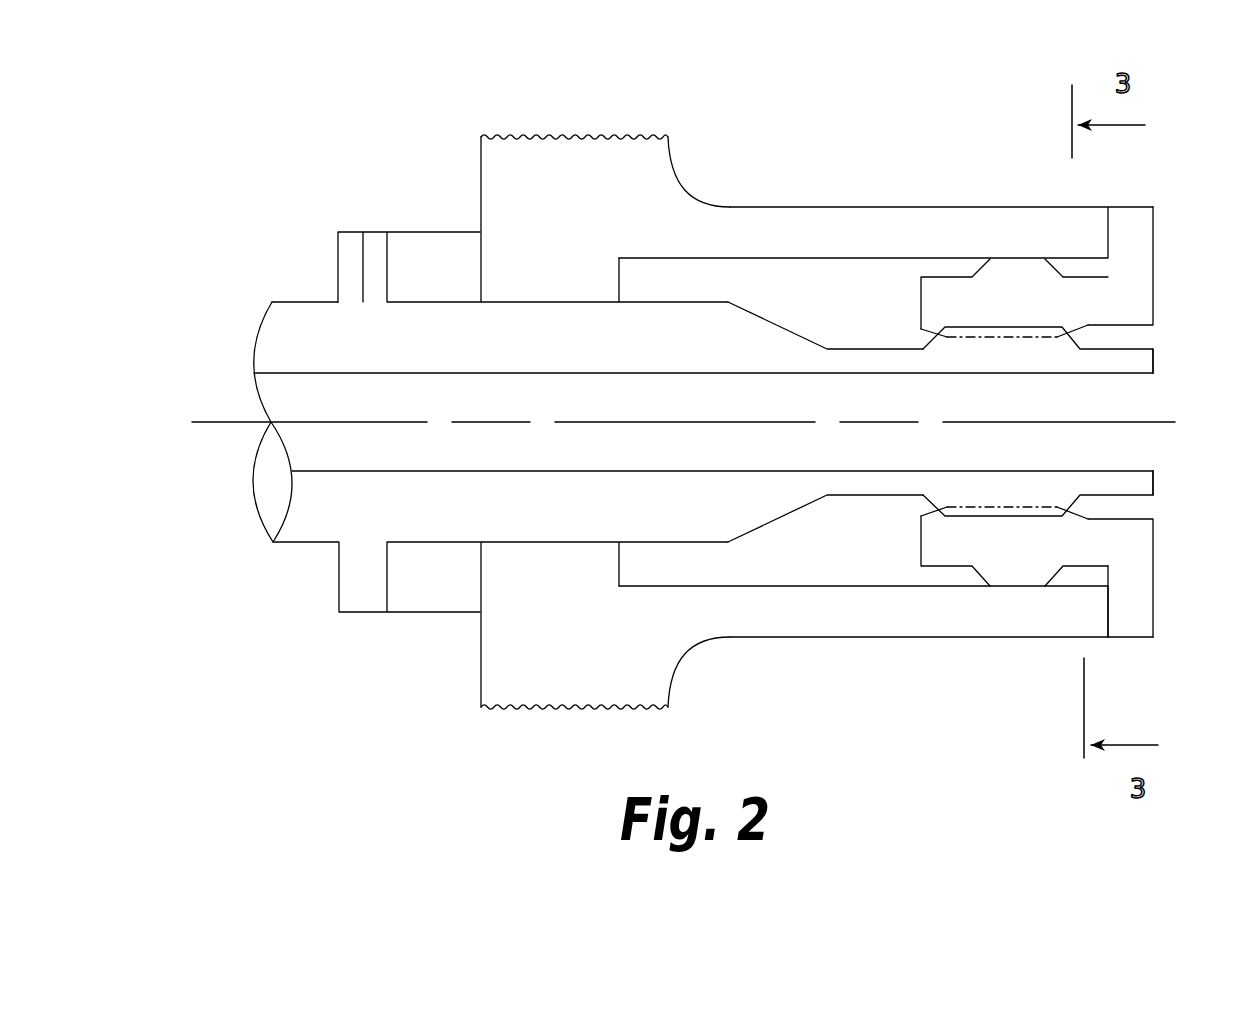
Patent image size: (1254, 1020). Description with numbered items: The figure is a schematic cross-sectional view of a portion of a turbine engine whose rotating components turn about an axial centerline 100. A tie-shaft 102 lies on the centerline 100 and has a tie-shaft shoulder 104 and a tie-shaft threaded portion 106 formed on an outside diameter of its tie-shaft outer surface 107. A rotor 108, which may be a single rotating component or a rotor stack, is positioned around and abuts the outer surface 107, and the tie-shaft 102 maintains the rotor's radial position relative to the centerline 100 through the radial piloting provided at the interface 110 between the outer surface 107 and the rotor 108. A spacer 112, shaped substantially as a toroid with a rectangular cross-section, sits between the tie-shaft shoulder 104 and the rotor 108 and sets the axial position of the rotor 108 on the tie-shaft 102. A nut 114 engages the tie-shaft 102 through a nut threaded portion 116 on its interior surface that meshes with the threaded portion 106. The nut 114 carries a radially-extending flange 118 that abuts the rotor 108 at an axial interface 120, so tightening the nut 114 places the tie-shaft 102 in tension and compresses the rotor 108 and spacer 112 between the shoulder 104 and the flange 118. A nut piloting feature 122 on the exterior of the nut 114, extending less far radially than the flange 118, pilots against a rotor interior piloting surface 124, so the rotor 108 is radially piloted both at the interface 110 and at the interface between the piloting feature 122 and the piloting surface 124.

The axial centerline 100 is at (227, 423).
The tie-shaft 102 is at (306, 296).
The tie-shaft shoulder 104 is at (358, 616).
The tie-shaft threaded portion 106 is at (965, 516).
The tie-shaft outer surface 107 is at (864, 500).
The rotor 108 is at (690, 192).
The interface 110 is at (543, 298).
The spacer 112 is at (440, 228).
The nut 114 is at (1103, 294).
The nut threaded portion 116 is at (1045, 503).
The radially-extending flange 118 is at (1157, 591).
The axial interface 120 is at (1113, 624).
The nut piloting feature 122 is at (1019, 592).
The rotor interior piloting surface 124 is at (840, 253).